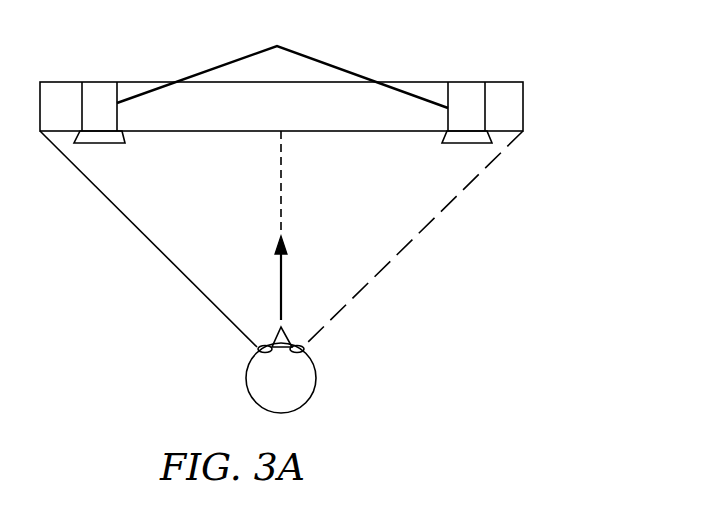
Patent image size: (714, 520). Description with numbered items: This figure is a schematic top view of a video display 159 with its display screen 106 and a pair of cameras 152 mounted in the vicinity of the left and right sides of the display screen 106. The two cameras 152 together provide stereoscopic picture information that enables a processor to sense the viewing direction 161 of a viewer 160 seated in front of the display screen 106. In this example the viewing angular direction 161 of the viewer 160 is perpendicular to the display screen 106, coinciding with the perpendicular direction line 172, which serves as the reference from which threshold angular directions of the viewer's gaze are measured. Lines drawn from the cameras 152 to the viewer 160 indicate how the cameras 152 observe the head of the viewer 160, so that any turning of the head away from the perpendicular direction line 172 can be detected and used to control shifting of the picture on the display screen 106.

The cameras 152 is at (102, 82).
The video display 159 is at (523, 100).
The display screen 106 is at (385, 131).
The perpendicular direction line 172 is at (281, 172).
The viewing direction 161 is at (281, 207).
The viewer 160 is at (246, 370).